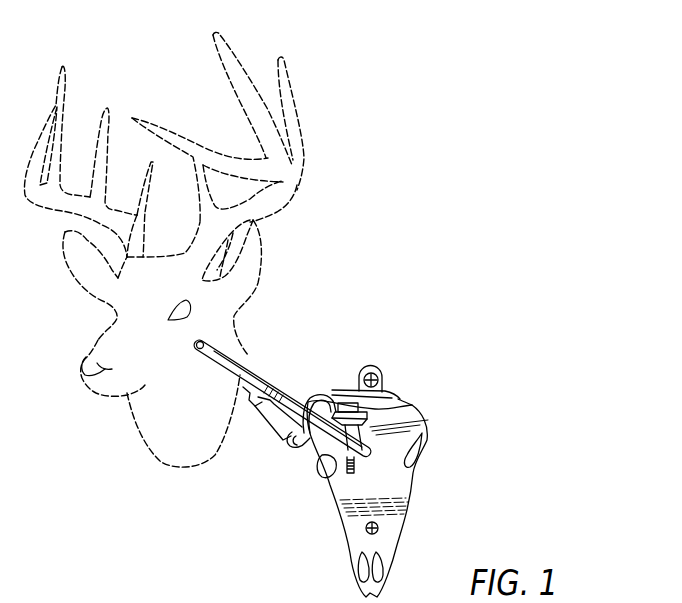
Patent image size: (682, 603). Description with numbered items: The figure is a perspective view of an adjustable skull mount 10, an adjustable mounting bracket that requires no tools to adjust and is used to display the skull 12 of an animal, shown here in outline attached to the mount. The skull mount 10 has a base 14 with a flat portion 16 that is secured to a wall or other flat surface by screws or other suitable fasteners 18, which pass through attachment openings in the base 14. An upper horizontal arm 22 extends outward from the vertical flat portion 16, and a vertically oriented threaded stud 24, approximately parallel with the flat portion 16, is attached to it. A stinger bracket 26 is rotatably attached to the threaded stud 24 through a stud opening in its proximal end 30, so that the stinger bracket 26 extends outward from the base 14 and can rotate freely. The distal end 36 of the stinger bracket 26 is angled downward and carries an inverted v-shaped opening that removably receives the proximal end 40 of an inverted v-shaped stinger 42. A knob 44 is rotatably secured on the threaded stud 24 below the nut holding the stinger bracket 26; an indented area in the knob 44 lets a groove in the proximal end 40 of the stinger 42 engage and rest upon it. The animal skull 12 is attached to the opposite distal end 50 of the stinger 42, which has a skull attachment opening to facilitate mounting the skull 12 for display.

The adjustable skull mount 10 is at (491, 379).
The skull 12 is at (115, 335).
The base 14 is at (403, 477).
The flat portion 16 is at (392, 517).
The fasteners 18 is at (358, 368).
The upper horizontal arm 22 is at (390, 390).
The threaded stud 24 is at (332, 477).
The stinger bracket 26 is at (316, 392).
The proximal end 30 is at (393, 408).
The distal end 36 is at (290, 450).
The proximal end 40 is at (407, 454).
The inverted v-shaped stinger 42 is at (252, 393).
The knob 44 is at (393, 435).
The distal end 50 is at (232, 352).